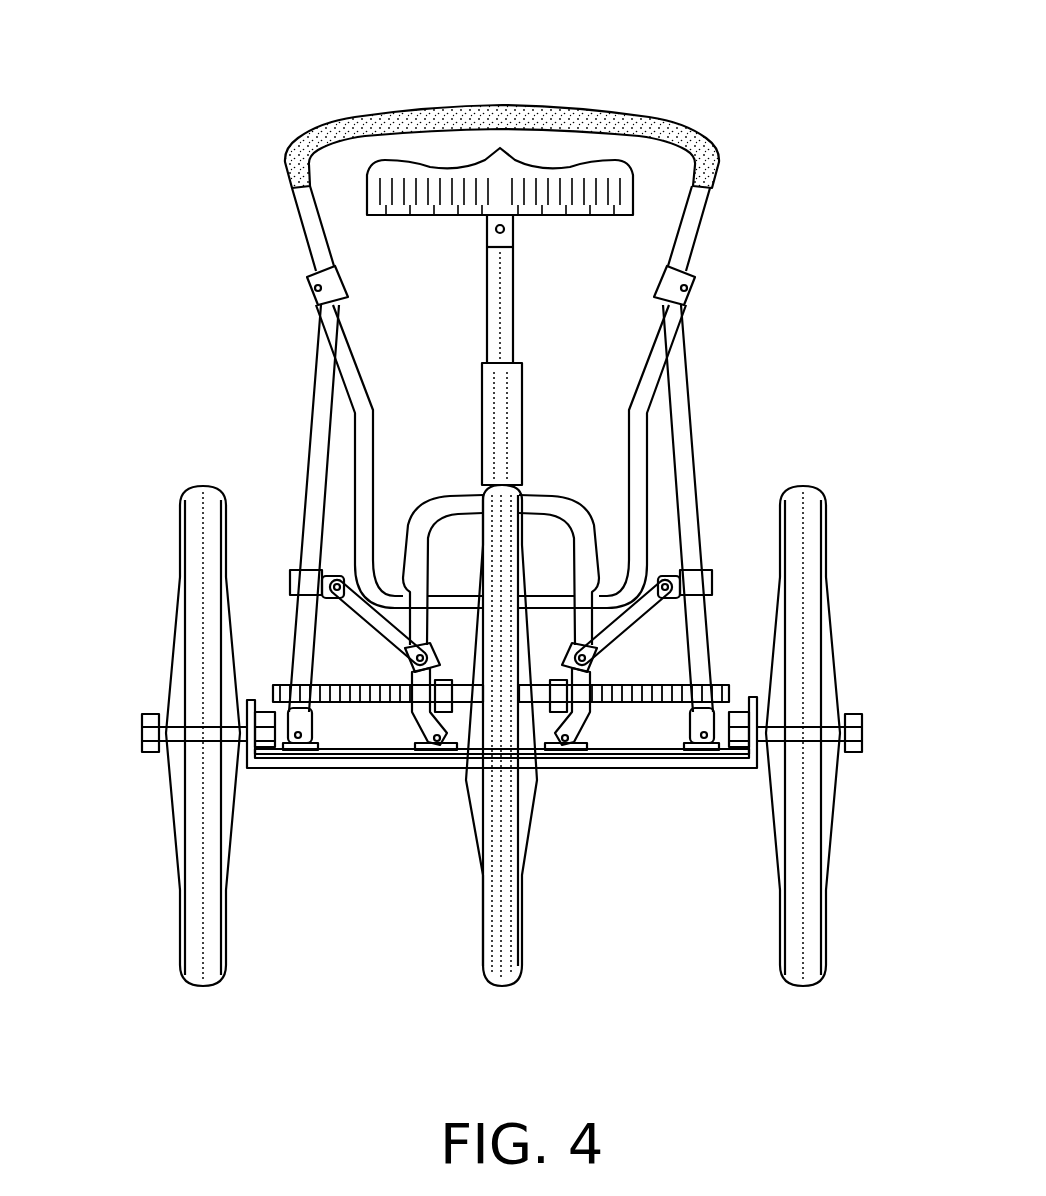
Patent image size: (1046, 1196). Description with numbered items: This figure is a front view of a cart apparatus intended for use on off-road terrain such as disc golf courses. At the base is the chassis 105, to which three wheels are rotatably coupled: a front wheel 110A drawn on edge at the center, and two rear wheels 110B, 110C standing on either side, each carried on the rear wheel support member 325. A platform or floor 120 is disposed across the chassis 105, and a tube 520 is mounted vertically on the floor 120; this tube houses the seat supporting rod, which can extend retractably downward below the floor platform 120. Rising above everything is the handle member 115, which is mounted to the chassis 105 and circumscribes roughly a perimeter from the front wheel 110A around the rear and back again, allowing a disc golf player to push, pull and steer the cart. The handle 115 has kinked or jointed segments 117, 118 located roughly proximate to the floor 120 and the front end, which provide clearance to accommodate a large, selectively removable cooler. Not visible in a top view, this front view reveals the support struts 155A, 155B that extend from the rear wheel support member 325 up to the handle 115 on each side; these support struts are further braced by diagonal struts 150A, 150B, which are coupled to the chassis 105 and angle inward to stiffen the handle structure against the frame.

The handle member 115 is at (465, 106).
The tube 520 is at (488, 396).
The support strut 155A is at (313, 404).
The support strut 155B is at (688, 443).
The kinked or jointed segment 118 is at (402, 558).
The kinked or jointed segment 117 is at (601, 558).
The platform or floor 120 is at (328, 704).
The diagonal strut 150B is at (388, 663).
The diagonal strut 150A is at (613, 652).
The chassis 105 is at (640, 748).
The rear wheel support member 325 is at (618, 708).
The front wheel 110A is at (525, 976).
The rear wheel 110B is at (179, 970).
The rear wheel 110C is at (827, 972).